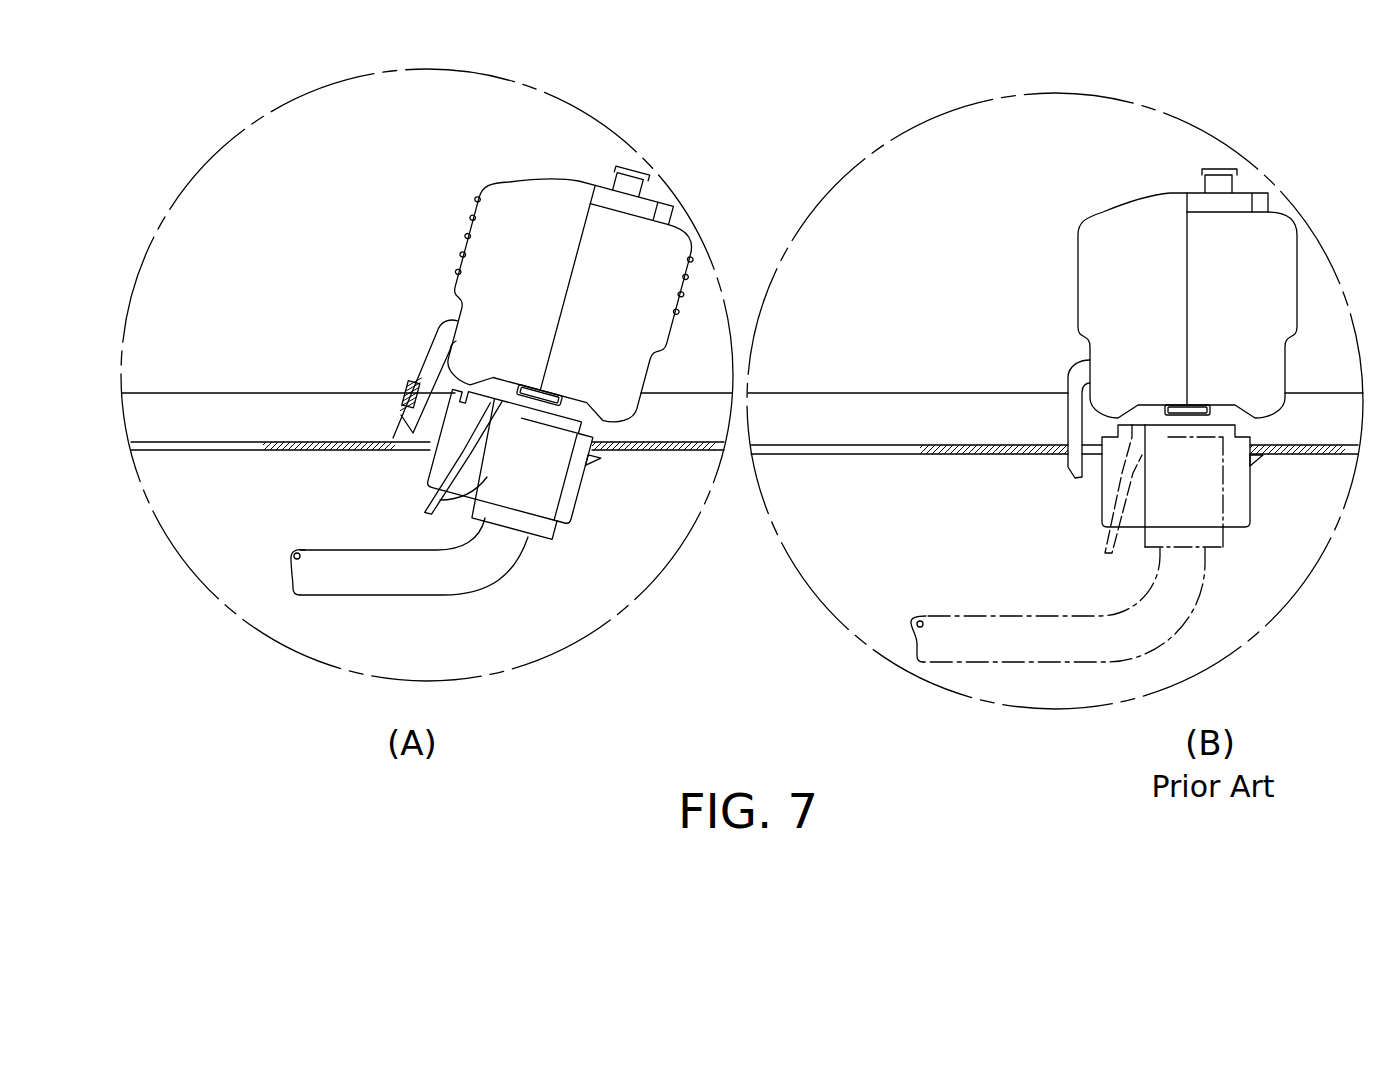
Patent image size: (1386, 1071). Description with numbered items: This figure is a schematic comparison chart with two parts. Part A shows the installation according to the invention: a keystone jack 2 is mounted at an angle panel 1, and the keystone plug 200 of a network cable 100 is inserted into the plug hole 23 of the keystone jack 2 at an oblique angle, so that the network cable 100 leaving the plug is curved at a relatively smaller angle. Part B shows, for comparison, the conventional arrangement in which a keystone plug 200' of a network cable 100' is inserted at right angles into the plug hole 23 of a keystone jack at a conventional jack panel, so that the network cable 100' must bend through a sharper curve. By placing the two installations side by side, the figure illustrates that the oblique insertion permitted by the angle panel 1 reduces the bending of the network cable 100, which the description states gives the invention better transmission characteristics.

The angle panel 1 is at (212, 377).
The keystone jack 2 is at (516, 200).
The plug hole 23 is at (442, 457).
The network cable 100 is at (409, 623).
The keystone plug 200 is at (527, 541).
The network cable 100' is at (1058, 663).
The keystone plug 200' is at (1235, 576).